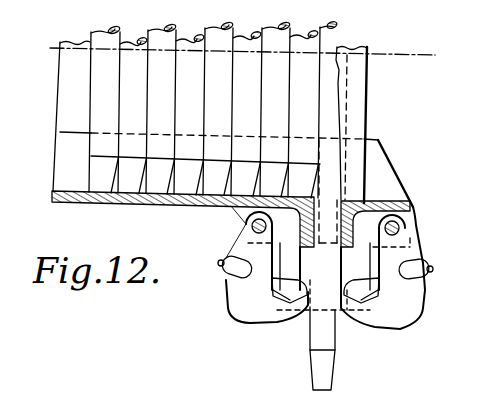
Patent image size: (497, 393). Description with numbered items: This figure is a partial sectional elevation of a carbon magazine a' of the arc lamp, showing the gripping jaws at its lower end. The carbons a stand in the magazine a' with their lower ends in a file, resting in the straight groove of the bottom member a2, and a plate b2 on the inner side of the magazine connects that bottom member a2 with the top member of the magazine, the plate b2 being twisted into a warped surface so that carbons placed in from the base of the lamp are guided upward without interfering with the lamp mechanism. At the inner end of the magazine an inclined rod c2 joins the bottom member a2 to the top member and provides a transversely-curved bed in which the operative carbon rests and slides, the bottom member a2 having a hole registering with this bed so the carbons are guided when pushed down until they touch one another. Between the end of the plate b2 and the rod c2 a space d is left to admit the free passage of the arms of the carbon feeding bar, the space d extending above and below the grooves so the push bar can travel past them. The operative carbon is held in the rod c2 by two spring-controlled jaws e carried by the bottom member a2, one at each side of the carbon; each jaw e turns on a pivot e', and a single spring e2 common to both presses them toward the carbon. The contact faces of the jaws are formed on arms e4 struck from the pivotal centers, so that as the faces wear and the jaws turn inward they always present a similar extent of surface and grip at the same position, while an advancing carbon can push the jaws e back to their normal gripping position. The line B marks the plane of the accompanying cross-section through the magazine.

The section line B— B is at (242, 52).
The plate b2 is at (72, 116).
The carbons a is at (213, 109).
The magazine a' is at (191, 133).
The inclined rod c2 is at (358, 77).
The bottom member a2 is at (388, 173).
The jaws e is at (325, 267).
The pivot e' is at (326, 225).
The spring e2 is at (219, 264).
The arms e4 is at (304, 302).
The space d is at (323, 335).